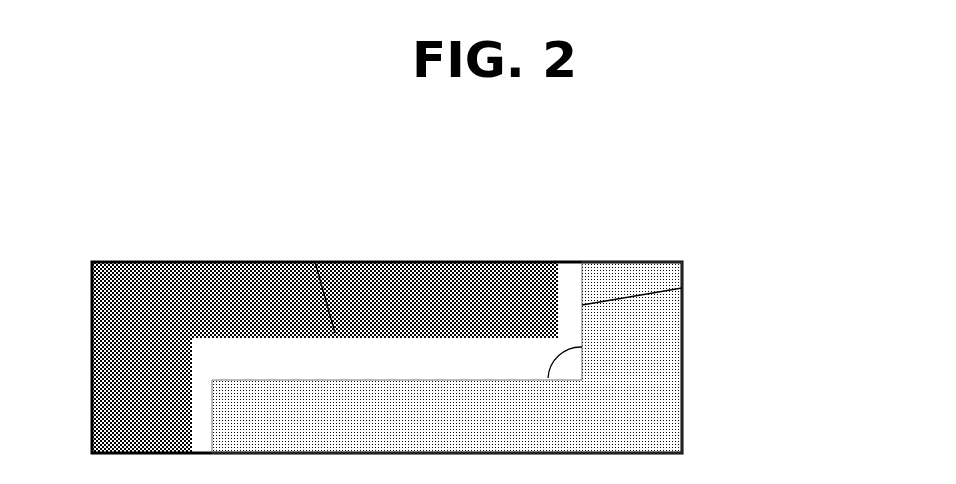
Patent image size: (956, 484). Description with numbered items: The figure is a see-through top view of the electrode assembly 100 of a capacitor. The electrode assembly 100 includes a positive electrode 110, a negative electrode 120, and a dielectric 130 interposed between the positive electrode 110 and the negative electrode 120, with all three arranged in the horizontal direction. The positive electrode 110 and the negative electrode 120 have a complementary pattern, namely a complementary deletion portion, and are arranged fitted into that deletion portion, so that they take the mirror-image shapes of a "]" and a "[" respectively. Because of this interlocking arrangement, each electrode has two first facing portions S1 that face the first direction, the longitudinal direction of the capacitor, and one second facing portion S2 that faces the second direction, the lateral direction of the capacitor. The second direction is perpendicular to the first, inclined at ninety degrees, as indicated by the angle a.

The electrode assembly 100 is at (83, 126).
The positive electrode 110 is at (208, 277).
The negative electrode 120 is at (637, 278).
The dielectric 130 is at (573, 277).
The first facing portion S1 is at (682, 288).
The second facing portion S2 is at (315, 262).
The angle a is at (551, 359).